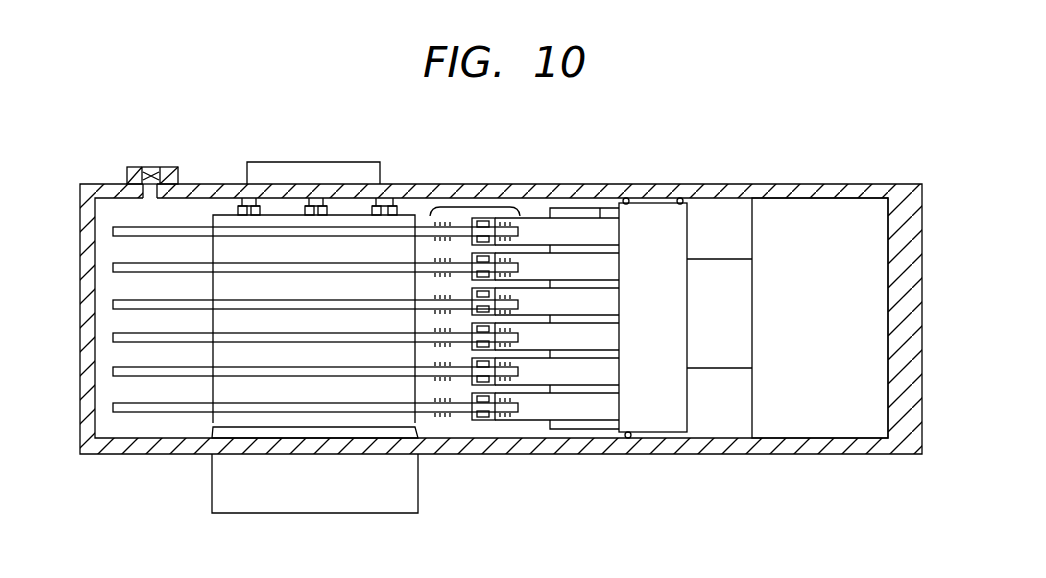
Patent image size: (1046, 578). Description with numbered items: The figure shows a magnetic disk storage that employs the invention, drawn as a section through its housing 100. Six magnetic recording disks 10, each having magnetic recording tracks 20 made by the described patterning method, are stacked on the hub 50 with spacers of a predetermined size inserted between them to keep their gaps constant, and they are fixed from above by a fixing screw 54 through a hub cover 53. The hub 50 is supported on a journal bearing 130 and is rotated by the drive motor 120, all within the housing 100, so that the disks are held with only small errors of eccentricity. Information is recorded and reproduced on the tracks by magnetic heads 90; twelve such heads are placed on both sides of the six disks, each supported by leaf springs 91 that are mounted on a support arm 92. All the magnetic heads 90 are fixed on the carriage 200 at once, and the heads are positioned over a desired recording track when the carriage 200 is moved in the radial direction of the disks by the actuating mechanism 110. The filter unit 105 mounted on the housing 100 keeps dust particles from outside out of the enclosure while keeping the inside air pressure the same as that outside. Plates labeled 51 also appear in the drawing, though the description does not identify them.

The magnetic recording disk 10 is at (302, 278).
The magnetic recording track 20 is at (476, 212).
The hub 50 is at (213, 425).
The plates 51 is at (217, 283).
The hub cover 53 is at (222, 214).
The fixing screw 54 is at (251, 204).
The magnetic head 90 is at (484, 226).
The leaf spring 91 is at (541, 214).
The support arm 92 is at (604, 210).
The housing 100 is at (564, 446).
The filter unit 105 is at (158, 166).
The actuating mechanism 110 is at (786, 420).
The drive motor 120 is at (418, 506).
The journal bearing 130 is at (365, 170).
The carriage 200 is at (684, 400).